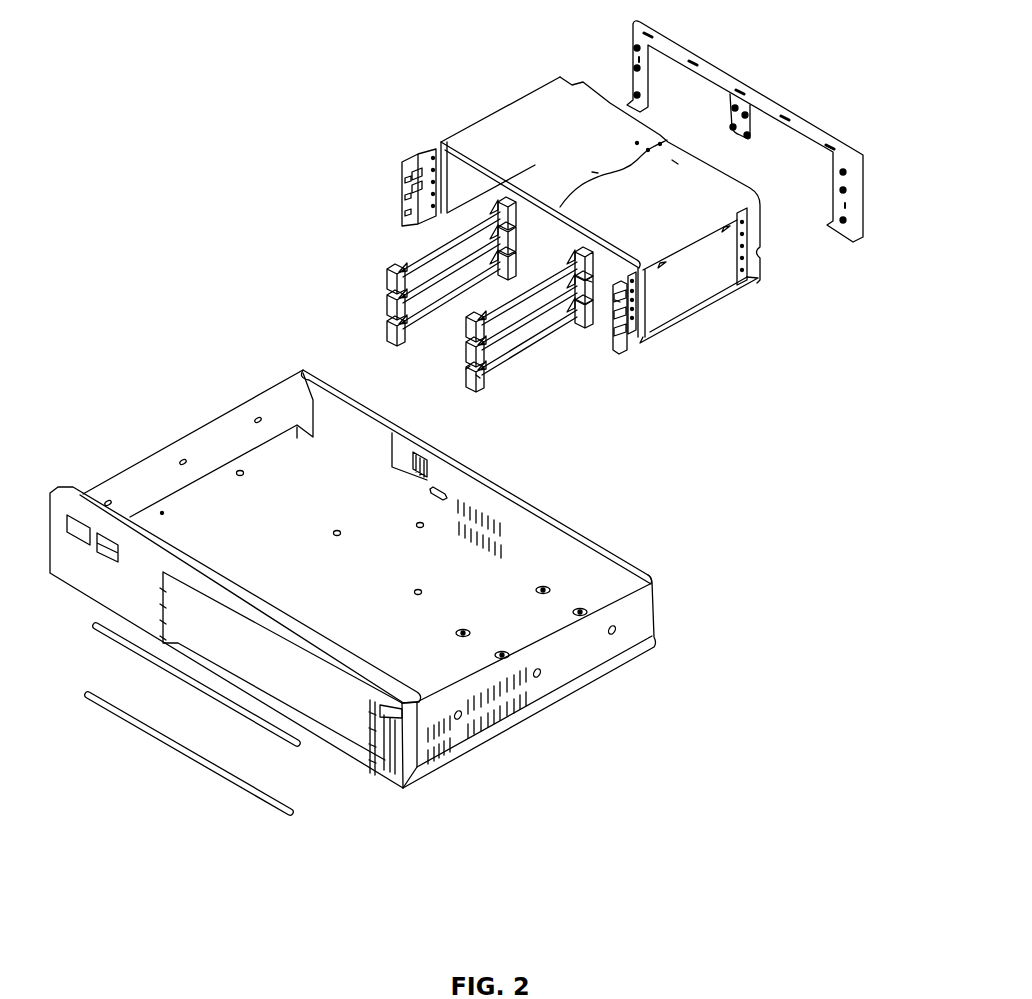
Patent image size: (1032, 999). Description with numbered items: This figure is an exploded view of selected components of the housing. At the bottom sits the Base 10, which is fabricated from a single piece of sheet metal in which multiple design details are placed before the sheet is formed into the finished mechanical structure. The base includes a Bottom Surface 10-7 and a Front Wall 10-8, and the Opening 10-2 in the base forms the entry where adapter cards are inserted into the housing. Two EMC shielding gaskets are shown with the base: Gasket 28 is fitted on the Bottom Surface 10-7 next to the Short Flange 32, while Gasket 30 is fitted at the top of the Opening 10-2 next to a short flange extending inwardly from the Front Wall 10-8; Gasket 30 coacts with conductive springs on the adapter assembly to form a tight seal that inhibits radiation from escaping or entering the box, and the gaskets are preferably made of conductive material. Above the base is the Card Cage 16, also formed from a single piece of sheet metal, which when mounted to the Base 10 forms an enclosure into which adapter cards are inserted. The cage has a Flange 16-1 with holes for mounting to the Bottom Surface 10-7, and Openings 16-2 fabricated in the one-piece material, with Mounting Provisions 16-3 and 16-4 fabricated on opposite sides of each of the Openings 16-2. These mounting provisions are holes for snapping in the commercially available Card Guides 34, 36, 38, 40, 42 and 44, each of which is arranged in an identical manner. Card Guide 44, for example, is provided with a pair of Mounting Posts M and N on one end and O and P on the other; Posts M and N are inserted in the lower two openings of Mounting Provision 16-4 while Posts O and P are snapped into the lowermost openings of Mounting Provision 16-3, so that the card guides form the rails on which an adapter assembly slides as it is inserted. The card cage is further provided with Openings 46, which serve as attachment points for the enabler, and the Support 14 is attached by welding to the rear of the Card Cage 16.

The base 10 is at (507, 738).
The opening 10-2 is at (281, 666).
The bottom surface 10-7 is at (345, 538).
The front wall 10-8 is at (235, 637).
The support 14 is at (869, 213).
The card cage 16 is at (757, 323).
The flange 16-1 is at (467, 194).
The openings 16-2 is at (460, 171).
The mounting provision 16-3 is at (395, 191).
The mounting provision 16-4 is at (421, 182).
The gasket 28 is at (205, 766).
The gasket 30 is at (200, 700).
The short flange 32 is at (357, 762).
The card guide 34 is at (383, 277).
The card guide 36 is at (383, 303).
The card guide 38 is at (383, 329).
The card guide 40 is at (462, 322).
The card guide 42 is at (462, 349).
The card guide 44 is at (466, 388).
The openings 46 is at (600, 180).
The mounting post M is at (590, 282).
The mounting post N is at (618, 302).
The mounting post O is at (463, 372).
The mounting post P is at (472, 381).